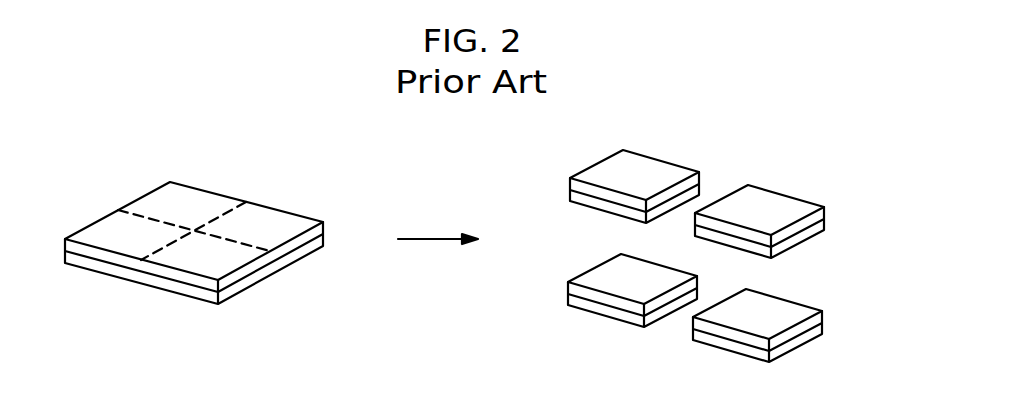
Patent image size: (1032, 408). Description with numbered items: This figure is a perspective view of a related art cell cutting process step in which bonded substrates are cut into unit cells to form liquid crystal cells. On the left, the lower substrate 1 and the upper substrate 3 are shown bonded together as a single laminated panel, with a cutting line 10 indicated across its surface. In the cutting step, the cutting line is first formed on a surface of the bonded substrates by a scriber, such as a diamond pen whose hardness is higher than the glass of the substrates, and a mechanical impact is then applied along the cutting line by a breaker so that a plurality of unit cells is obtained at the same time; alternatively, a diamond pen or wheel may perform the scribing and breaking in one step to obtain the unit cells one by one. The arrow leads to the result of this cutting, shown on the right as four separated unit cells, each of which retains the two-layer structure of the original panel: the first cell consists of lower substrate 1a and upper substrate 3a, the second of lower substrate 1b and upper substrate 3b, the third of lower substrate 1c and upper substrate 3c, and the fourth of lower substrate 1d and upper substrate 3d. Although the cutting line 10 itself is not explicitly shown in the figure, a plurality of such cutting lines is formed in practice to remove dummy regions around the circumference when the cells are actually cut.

The lower substrate 1 is at (323, 243).
The upper substrate 3 is at (323, 232).
The cutting line 10 is at (232, 208).
The lower substrate of unit cell 1a is at (570, 196).
The upper substrate of unit cell 3a is at (570, 184).
The lower substrate of unit cell 1b is at (824, 225).
The upper substrate of unit cell 3b is at (824, 212).
The lower substrate of unit cell 1c is at (568, 299).
The upper substrate of unit cell 3c is at (568, 288).
The lower substrate of unit cell 1d is at (822, 330).
The upper substrate of unit cell 3d is at (822, 316).